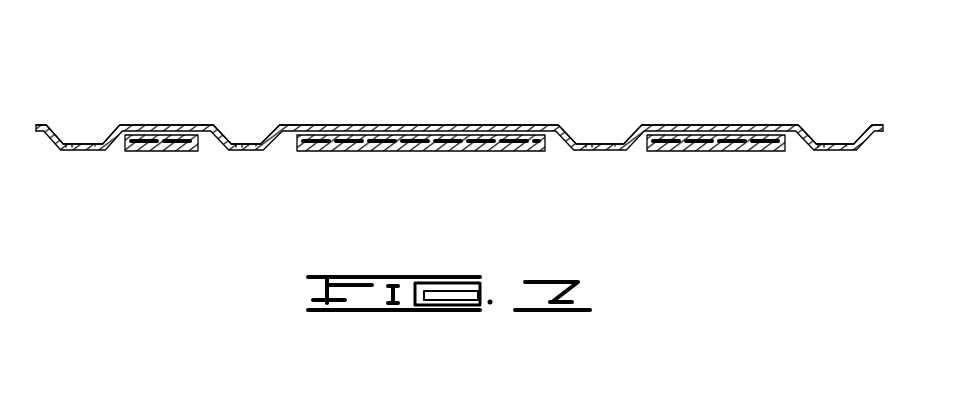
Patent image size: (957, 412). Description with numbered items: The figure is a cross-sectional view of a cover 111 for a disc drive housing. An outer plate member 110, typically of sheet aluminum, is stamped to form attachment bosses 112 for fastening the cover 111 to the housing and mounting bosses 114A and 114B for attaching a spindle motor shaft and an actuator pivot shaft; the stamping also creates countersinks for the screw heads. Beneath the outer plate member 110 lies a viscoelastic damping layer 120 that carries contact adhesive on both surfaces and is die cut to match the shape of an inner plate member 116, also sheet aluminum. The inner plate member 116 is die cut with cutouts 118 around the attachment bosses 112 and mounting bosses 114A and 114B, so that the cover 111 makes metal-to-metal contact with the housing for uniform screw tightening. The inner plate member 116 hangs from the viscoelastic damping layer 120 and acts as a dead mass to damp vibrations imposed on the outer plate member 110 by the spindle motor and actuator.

The outer plate member 110 is at (420, 125).
The cover 111 is at (443, 114).
The attachment bosses 112 is at (62, 150).
The mounting boss 114A is at (625, 150).
The mounting boss 114B is at (235, 150).
The inner plate member 116 is at (156, 151).
The cutouts 118 is at (293, 152).
The viscoelastic damping layer 120 is at (156, 125).